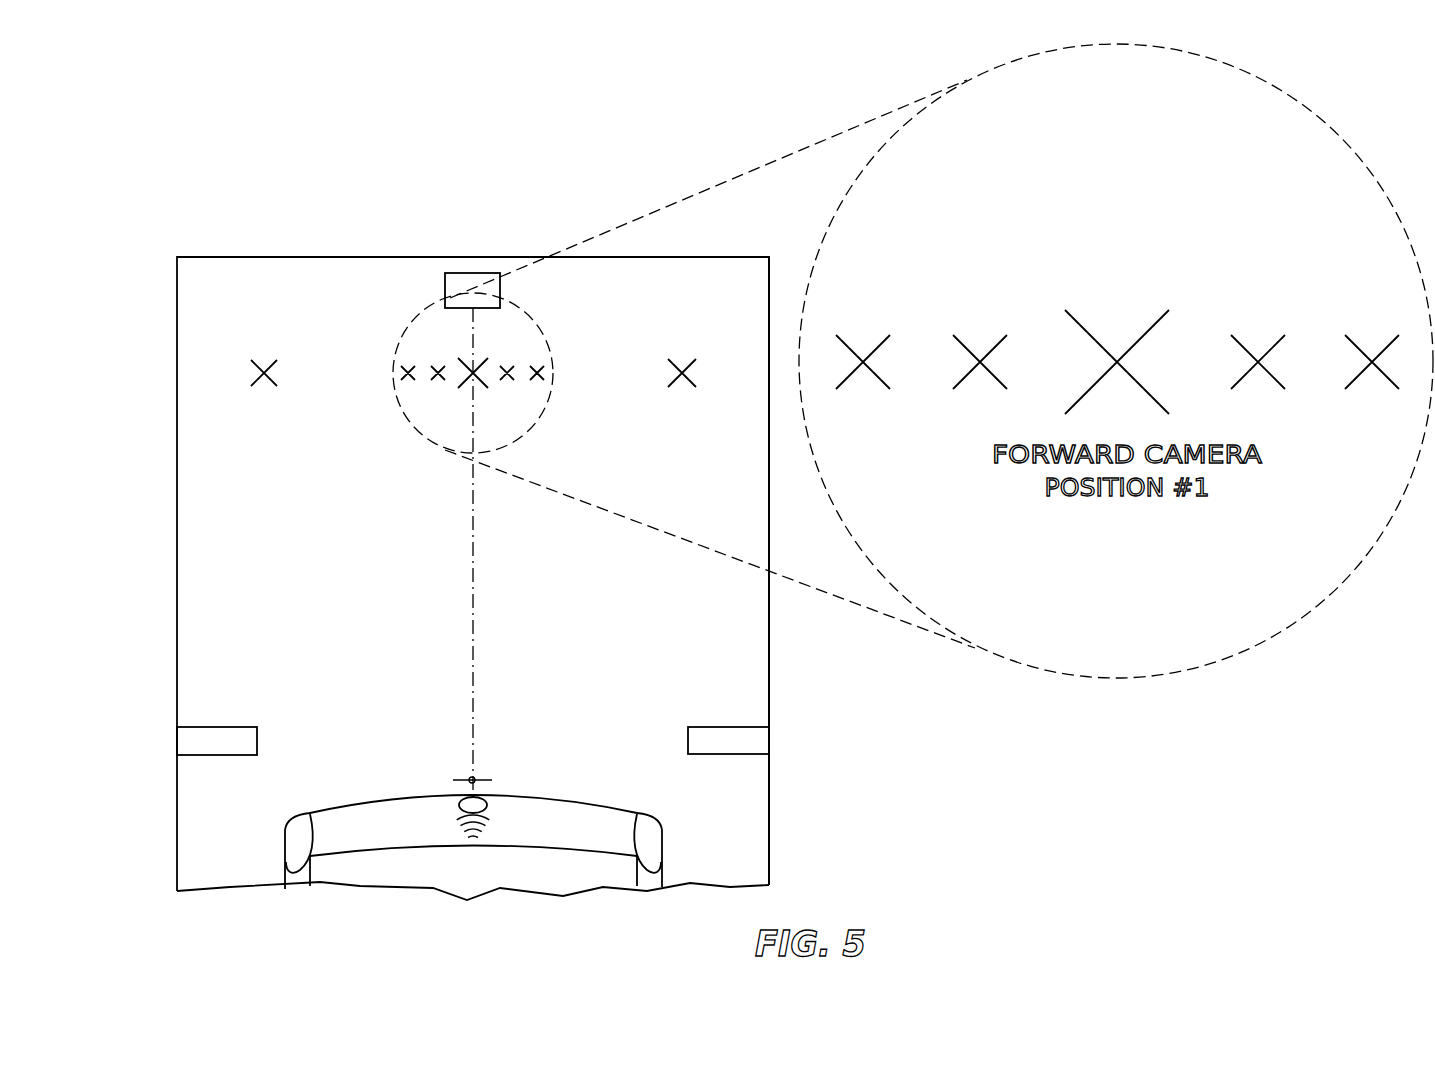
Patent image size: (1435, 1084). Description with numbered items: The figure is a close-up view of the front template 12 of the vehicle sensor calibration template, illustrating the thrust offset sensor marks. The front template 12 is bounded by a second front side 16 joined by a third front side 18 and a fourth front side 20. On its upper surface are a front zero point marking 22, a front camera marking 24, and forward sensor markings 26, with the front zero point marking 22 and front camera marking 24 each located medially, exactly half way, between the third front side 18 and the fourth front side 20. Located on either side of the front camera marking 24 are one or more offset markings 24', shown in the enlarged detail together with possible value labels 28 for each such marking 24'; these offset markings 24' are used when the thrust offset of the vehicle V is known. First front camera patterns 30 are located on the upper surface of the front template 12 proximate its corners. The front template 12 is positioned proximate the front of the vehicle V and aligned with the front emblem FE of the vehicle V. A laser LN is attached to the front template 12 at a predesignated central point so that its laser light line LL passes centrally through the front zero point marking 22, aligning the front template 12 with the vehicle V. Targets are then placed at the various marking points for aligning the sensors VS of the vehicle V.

The front template 12 is at (286, 290).
The second front side 16 is at (672, 257).
The third front side 18 is at (769, 816).
The fourth front side 20 is at (177, 627).
The front zero point marking 22 is at (472, 778).
The front camera marking 24 is at (778, 365).
The offset markings 24' is at (900, 382).
The forward sensor markings 26 is at (262, 375).
The value labels 28 is at (868, 262).
The first front camera patterns 30 is at (200, 741).
The laser LN is at (448, 273).
The laser light line LL is at (473, 603).
The front emblem FE is at (482, 800).
The sensors VS is at (458, 817).
The vehicle V is at (515, 870).